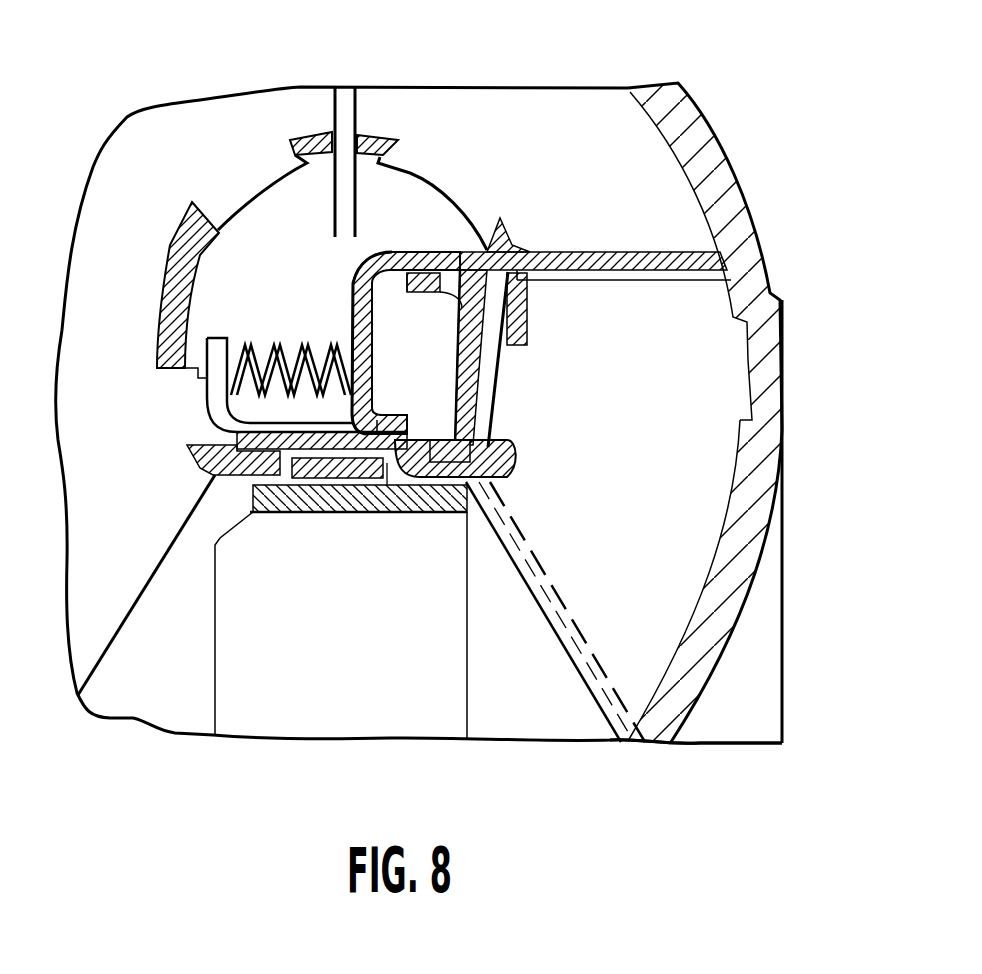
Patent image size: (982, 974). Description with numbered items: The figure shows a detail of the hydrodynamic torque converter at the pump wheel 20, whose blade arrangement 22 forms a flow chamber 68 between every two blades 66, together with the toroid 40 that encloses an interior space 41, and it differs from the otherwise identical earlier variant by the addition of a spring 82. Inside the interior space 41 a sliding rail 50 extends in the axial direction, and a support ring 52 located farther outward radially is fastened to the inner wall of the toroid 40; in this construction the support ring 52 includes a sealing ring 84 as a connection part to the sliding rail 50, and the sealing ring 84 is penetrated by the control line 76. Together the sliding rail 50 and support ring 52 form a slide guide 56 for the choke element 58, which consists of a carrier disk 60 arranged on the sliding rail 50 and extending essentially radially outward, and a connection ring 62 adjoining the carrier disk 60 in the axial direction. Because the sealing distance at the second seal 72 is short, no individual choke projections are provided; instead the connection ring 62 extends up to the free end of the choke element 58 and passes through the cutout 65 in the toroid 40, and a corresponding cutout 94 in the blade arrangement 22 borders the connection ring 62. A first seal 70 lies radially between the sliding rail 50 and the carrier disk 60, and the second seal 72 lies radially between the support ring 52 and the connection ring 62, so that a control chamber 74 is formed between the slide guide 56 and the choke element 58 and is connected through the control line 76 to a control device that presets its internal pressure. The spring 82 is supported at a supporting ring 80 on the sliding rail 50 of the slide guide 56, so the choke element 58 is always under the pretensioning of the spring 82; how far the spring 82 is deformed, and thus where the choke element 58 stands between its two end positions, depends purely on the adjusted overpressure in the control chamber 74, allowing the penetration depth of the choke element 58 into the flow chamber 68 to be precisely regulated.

The pump wheel 20 is at (652, 206).
The blade arrangement 22 is at (690, 510).
The toroid 40 is at (384, 122).
The interior space 41 is at (313, 197).
The sliding rail 50 is at (290, 512).
The support ring 52 is at (528, 290).
The slide guide 56 is at (430, 306).
The choke element 58 is at (352, 268).
The carrier disk 60 is at (362, 318).
The connection ring 62 is at (477, 250).
The cutout 65 is at (537, 253).
The blades 66 is at (647, 628).
The flow chamber 68 is at (675, 445).
The first seal 70 is at (390, 512).
The second seal 72 is at (438, 253).
The control chamber 74 is at (403, 328).
The control line 76 is at (565, 637).
The supporting ring 80 is at (217, 402).
The spring 82 is at (252, 360).
The sealing ring 84 is at (503, 448).
The cutout 94 is at (642, 282).